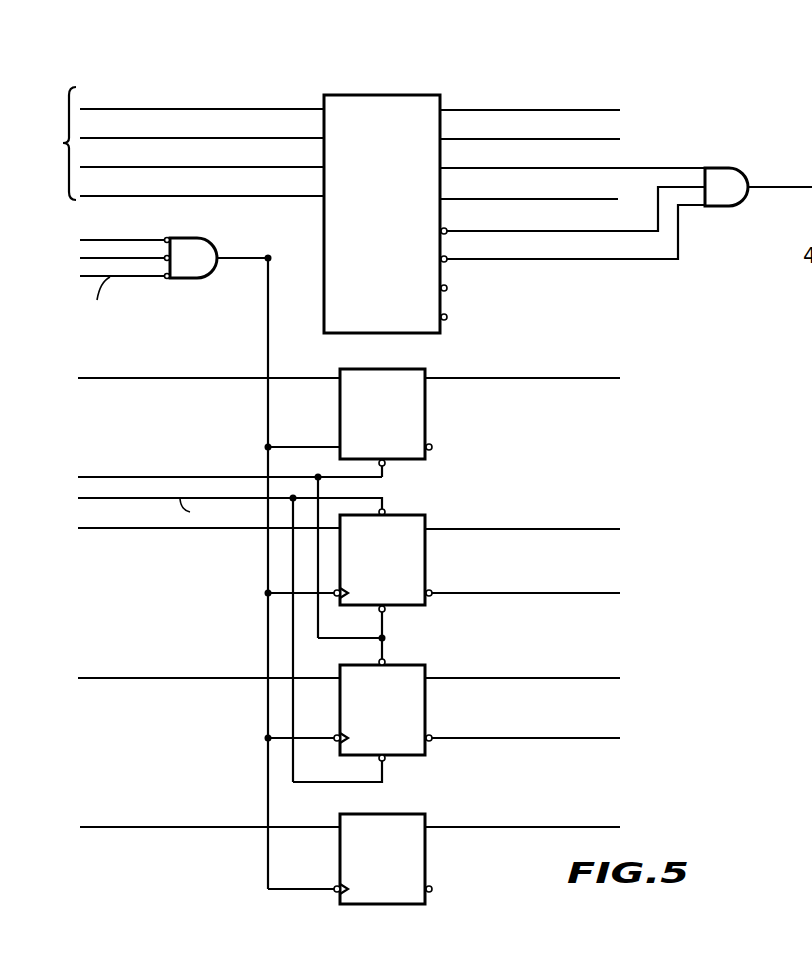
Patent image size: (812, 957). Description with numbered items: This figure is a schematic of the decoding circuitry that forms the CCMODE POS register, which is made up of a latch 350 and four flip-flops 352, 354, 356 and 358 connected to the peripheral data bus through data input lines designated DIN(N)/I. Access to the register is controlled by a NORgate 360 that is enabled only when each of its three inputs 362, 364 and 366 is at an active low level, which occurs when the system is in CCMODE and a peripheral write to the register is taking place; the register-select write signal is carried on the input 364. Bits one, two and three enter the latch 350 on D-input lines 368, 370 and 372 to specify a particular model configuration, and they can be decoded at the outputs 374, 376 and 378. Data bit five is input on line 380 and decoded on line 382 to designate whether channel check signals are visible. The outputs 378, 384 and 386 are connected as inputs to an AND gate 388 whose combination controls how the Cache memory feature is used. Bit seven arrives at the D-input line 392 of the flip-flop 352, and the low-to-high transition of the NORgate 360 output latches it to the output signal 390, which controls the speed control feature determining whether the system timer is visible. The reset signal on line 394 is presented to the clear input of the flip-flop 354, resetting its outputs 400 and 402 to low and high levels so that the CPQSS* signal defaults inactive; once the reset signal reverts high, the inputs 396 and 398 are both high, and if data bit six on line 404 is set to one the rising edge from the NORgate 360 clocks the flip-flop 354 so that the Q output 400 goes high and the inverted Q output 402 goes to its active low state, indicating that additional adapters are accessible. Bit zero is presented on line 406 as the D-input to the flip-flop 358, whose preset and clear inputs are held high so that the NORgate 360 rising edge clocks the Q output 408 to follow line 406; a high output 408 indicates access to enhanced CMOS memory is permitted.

The latch 350 is at (383, 93).
The flip-flop 352 is at (425, 417).
The flip-flop 354 is at (425, 517).
The flip-flop 356 is at (405, 665).
The flip-flop 358 is at (400, 813).
The NORgate 360 is at (215, 282).
The input 362 is at (84, 241).
The input 364 is at (84, 258).
The input 366 is at (84, 278).
The D-input line 368 is at (183, 109).
The D-input line 370 is at (183, 138).
The D-input line 372 is at (183, 167).
The output 374 is at (612, 112).
The output 376 is at (612, 141).
The output 378 is at (614, 168).
The input line 380 is at (183, 196).
The output line 382 is at (577, 198).
The output 384 is at (593, 232).
The output 386 is at (601, 259).
The AND gate 388 is at (745, 164).
The output signal 390 is at (600, 378).
The D-input line 392 is at (185, 378).
The reset input line 394 is at (172, 477).
The input 396 is at (384, 501).
The input 398 is at (386, 629).
The Q output 400 is at (598, 530).
The inverted Q output 402 is at (598, 593).
The DIN(6) line 404 is at (167, 529).
The DIN(0)/I line 406 is at (178, 829).
The Q output 408 is at (605, 827).